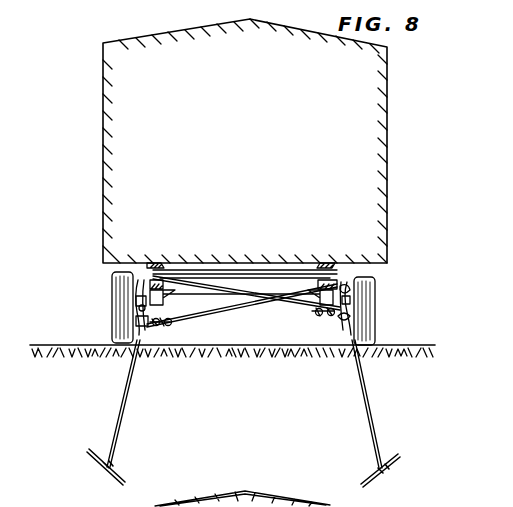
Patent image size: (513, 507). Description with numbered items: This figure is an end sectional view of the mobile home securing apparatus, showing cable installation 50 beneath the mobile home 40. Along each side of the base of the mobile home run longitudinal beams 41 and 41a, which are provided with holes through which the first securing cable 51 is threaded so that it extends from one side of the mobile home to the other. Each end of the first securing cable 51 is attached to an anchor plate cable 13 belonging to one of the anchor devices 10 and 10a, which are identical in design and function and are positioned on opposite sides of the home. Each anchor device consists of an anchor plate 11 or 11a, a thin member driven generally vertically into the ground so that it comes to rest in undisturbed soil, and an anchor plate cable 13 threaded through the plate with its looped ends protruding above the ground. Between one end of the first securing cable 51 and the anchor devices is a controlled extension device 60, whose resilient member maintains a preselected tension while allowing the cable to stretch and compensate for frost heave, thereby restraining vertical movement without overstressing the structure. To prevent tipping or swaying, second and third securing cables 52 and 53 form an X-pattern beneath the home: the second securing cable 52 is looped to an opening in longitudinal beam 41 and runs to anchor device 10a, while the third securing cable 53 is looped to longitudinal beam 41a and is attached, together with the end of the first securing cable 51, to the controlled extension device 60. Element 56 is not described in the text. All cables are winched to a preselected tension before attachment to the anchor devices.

The mobile home 40 is at (388, 148).
The cable installation 50 is at (97, 283).
The wheel hub 56 is at (140, 307).
The longitudinal beam 41a is at (149, 296).
The longitudinal beam 41 is at (330, 268).
The second securing cable 52 is at (203, 315).
The third securing cable 53 is at (292, 307).
The first securing cable 51 is at (143, 293).
The controlled extension device 60 is at (352, 318).
The anchor plate cable 13 is at (125, 401).
The anchor plate 11a is at (93, 462).
The anchor plate 11 is at (398, 462).
The anchor device 10a is at (137, 467).
The anchor device 10 is at (432, 420).